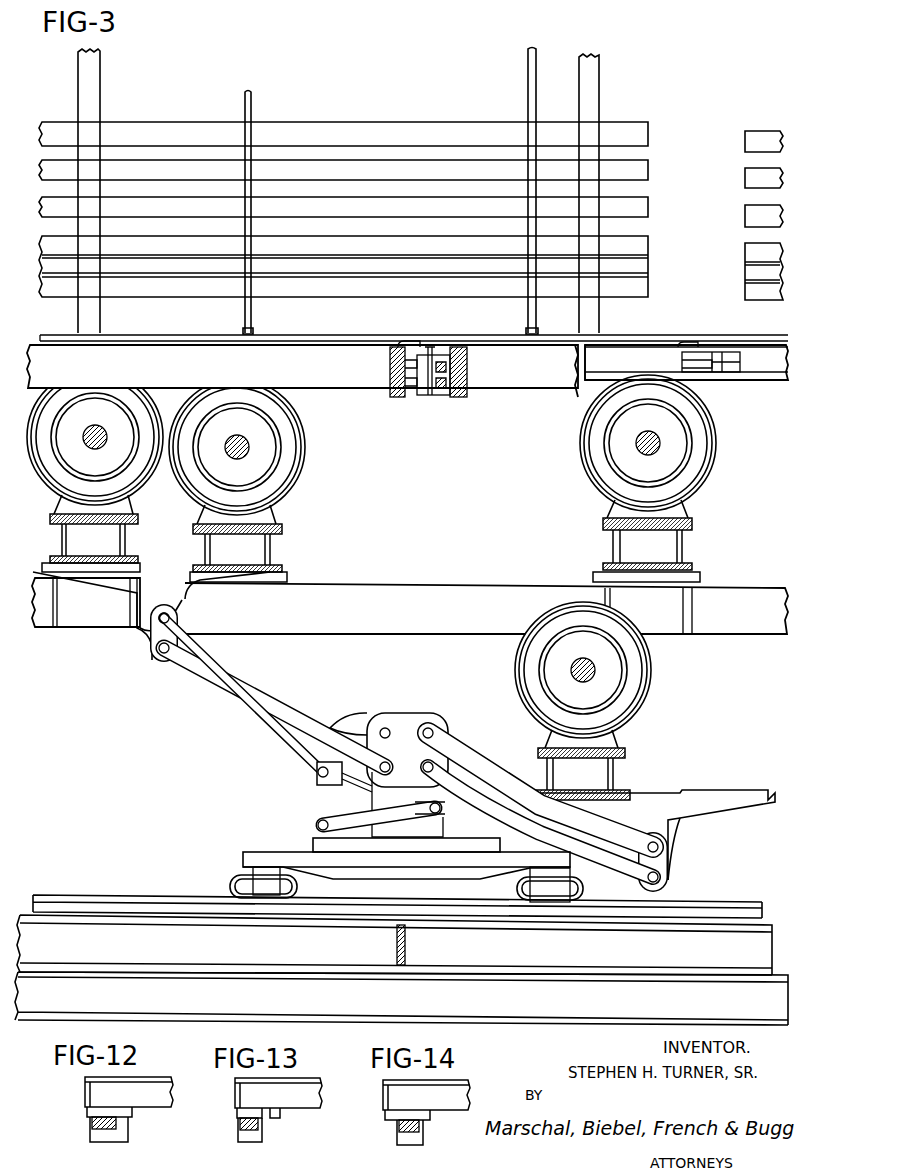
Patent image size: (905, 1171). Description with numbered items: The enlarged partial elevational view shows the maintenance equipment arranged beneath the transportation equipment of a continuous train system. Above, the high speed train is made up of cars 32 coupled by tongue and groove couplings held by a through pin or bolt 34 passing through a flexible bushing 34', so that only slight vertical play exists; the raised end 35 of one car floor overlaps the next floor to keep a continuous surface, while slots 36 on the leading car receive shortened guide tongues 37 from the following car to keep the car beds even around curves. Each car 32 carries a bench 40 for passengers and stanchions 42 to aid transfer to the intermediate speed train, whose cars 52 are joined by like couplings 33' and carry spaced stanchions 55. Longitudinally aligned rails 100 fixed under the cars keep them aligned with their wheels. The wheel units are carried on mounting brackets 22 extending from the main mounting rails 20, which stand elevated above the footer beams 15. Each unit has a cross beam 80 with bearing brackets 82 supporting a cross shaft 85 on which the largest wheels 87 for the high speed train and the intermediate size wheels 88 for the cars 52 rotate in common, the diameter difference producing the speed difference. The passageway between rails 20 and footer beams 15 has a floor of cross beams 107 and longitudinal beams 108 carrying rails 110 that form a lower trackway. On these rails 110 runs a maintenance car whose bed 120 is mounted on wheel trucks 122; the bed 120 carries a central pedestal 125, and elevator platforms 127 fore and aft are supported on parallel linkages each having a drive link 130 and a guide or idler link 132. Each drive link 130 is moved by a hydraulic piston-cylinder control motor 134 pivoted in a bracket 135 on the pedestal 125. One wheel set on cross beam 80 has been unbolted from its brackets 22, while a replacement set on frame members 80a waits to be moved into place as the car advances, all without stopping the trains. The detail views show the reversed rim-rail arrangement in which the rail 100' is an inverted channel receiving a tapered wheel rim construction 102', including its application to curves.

In FIG. 3, the footer beams 15 is at (490, 1003).
In FIG. 3, the mounting rails 20 is at (384, 584).
In FIG. 3, the mounting brackets 22 is at (53, 625).
In FIG. 3, the cars 32 is at (622, 345).
In FIG. 3, the couplings 33' is at (414, 396).
In FIG. 3, the through pin or bolt 34 is at (432, 350).
In FIG. 3, the flexible bushing 34' is at (447, 391).
In FIG. 3, the raised end 35 is at (404, 344).
In FIG. 3, the slots 36 is at (702, 372).
In FIG. 3, the guide tongues 37 is at (725, 351).
In FIG. 3, the bench 40 is at (198, 118).
In FIG. 3, the stanchions 42 is at (528, 72).
In FIG. 3, the cars 52 is at (329, 388).
In FIG. 3, the stanchions 55 is at (252, 97).
In FIG. 3, the cross beam 80 is at (120, 540).
In FIG. 3, the frame members 80a is at (266, 545).
In FIG. 3, the bearing brackets 82 is at (72, 501).
In FIG. 3, the cross shaft 85 is at (95, 449).
In FIG. 3, the largest wheels 87 is at (140, 486).
In FIG. 3, the intermediate size wheels 88 is at (296, 463).
In FIG. 3, the rails 100 is at (690, 380).
In FIG. 3, the cross beams 107 is at (406, 942).
In FIG. 3, the longitudinally extending beams 108 is at (132, 955).
In FIG. 3, the rails 110 is at (93, 893).
In FIG. 3, the bed 120 is at (300, 852).
In FIG. 3, the wheel trucks 122 is at (256, 880).
In FIG. 3, the pedestal 125 is at (408, 718).
In FIG. 3, the elevator platforms 127 is at (122, 584).
In FIG. 3, the drive link 130 is at (271, 728).
In FIG. 3, the guide or idler link 132 is at (284, 709).
In FIG. 3, the lift or elevator control motor 134 is at (388, 815).
In FIG. 3, the bracket 135 is at (314, 824).
In FIG. 12, the rail 100' is at (100, 1097).
In FIG. 13, the rail 100' is at (254, 1099).
In FIG. 14, the rail 100' is at (402, 1104).
In FIG. 12, the tapered wheel rim construction 102' is at (132, 1133).
In FIG. 13, the tapered wheel rim construction 102' is at (276, 1135).
In FIG. 14, the tapered wheel rim construction 102' is at (387, 1136).